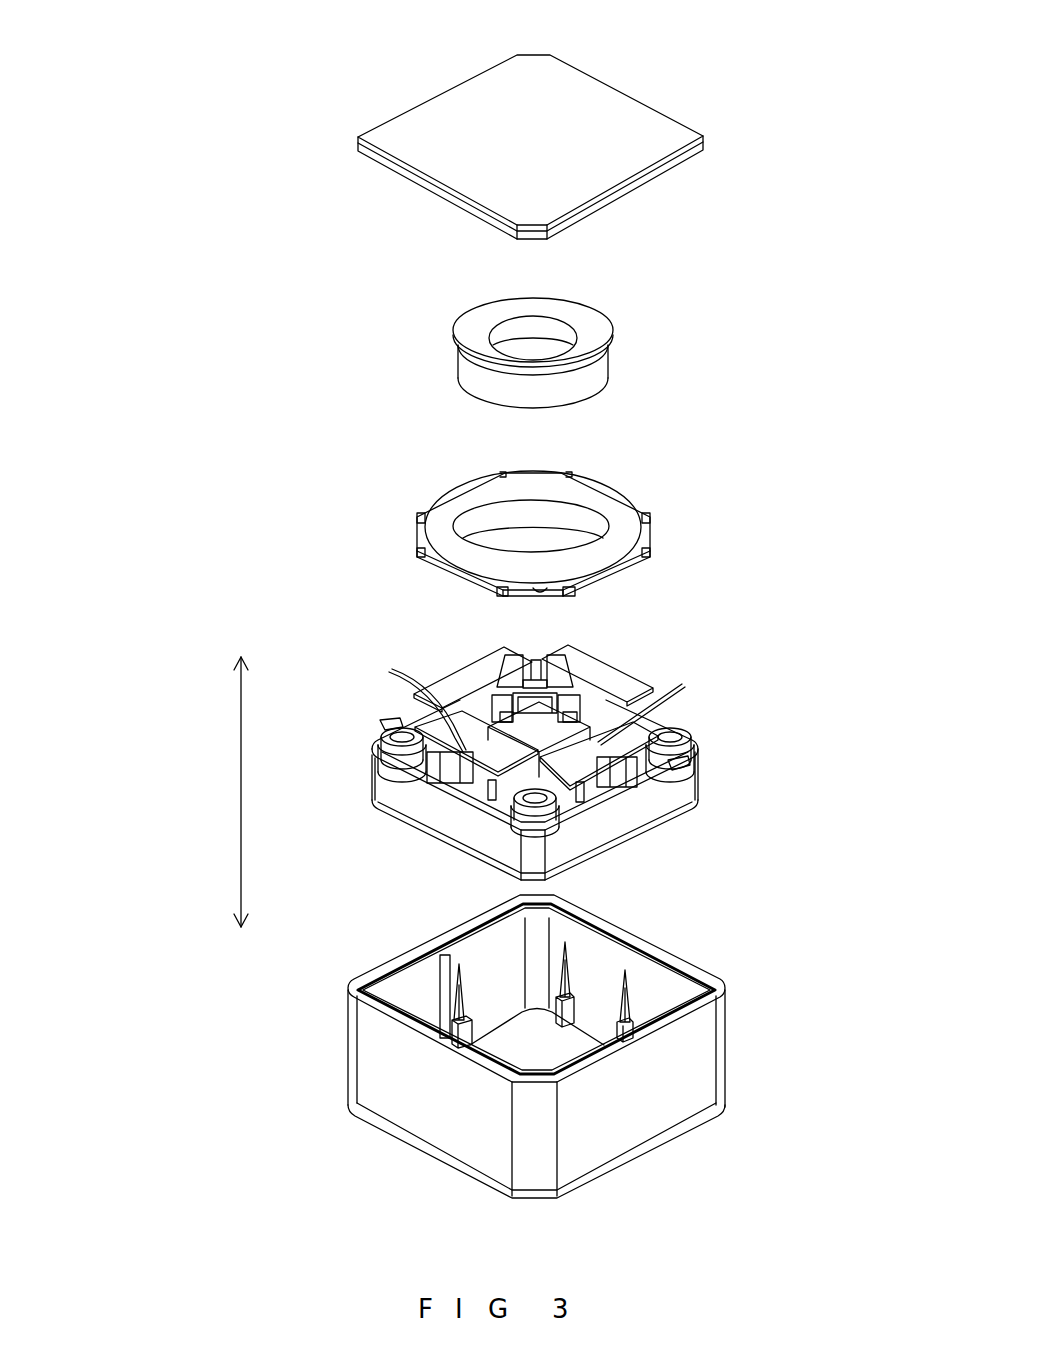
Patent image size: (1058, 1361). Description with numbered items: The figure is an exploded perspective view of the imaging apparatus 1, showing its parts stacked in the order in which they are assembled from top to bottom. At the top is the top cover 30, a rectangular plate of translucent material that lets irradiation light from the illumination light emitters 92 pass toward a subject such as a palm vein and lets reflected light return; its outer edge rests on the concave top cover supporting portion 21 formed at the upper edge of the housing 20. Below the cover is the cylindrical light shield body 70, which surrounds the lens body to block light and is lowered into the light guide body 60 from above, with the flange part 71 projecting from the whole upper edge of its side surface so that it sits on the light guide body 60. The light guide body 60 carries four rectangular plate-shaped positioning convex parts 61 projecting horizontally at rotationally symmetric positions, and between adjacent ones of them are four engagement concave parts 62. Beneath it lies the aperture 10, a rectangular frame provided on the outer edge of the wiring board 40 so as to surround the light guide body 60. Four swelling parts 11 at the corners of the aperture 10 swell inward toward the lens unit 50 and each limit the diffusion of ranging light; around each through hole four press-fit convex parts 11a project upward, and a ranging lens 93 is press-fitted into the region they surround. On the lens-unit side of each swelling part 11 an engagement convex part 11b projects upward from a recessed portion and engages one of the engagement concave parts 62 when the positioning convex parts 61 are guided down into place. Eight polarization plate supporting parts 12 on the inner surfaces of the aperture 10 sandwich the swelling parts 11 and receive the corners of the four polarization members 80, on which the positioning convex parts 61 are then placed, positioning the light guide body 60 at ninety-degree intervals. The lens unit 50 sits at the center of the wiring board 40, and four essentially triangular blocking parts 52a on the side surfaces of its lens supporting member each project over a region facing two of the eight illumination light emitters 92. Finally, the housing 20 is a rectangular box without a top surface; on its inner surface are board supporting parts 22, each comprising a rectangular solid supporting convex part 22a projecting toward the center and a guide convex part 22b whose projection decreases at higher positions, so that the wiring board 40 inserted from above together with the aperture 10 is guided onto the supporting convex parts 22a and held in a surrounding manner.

The imaging apparatus 1 is at (348, 95).
The top cover 30 is at (497, 78).
The light shield body 70 is at (447, 342).
The flange part 71 is at (601, 331).
The light guide body 60 is at (420, 531).
The positioning convex parts 61 is at (426, 504).
The engagement concave parts 62 is at (538, 591).
The aperture 10 is at (368, 772).
The wiring board 40 is at (373, 803).
The ranging lenses 93 is at (537, 660).
The polarization members 80 is at (437, 683).
The lens unit 50 is at (592, 722).
The swelling parts 11 is at (503, 698).
The press-fit convex parts 11a is at (522, 680).
The engagement convex part 11b is at (548, 700).
The polarization plate supporting parts 12 is at (500, 712).
The blocking parts 52a is at (491, 800).
The illumination light emitters 92 is at (686, 686).
The housing 20 is at (397, 957).
The top cover supporting portion 21 is at (650, 955).
The board supporting parts 22 is at (265, 1088).
The supporting convex part 22a is at (453, 1040).
The guide convex part 22b is at (455, 1008).